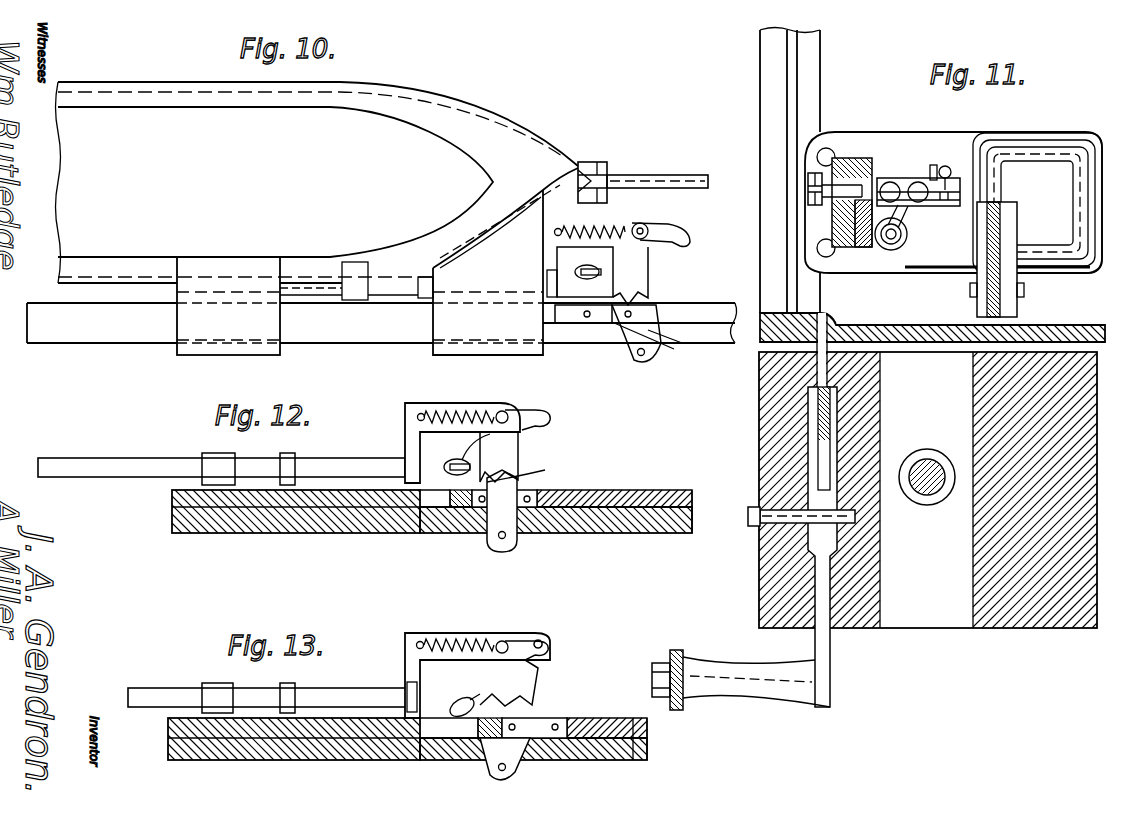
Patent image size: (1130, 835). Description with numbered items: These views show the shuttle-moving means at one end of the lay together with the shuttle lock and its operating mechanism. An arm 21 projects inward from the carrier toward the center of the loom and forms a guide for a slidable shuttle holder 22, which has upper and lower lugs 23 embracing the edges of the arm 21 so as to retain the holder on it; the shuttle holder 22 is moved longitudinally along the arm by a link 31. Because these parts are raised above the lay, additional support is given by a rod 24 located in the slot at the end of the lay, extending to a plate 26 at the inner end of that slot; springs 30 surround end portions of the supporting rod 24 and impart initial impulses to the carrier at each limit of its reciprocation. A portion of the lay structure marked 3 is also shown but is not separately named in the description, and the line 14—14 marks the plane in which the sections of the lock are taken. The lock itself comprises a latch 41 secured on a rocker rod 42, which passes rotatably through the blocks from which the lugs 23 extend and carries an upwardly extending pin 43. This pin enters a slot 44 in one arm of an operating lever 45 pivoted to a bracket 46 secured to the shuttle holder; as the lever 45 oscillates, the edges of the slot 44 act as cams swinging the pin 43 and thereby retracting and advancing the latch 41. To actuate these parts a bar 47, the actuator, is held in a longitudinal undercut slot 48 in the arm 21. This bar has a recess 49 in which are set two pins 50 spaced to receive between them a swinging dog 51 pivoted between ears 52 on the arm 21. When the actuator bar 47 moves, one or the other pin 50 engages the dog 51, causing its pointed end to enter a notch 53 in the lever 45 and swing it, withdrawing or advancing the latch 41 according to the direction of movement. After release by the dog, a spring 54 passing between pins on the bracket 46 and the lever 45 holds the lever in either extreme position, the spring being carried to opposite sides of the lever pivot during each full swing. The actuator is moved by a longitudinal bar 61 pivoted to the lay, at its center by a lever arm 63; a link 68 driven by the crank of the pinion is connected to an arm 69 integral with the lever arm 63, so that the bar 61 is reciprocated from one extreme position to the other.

In FIG. 11, the frame body 3 is at (1048, 618).
In FIG. 10, the section line 14 is at (311, 236).
In FIG. 11, the section line 14 is at (953, 202).
In FIG. 10, the arm 21 is at (382, 323).
In FIG. 11, the arm 21 is at (850, 156).
In FIG. 12, the arm 21 is at (305, 524).
In FIG. 13, the arm 21 is at (238, 745).
In FIG. 10, the shuttle holder 22 is at (452, 98).
In FIG. 11, the shuttle holder 22 is at (1060, 136).
In FIG. 10, the lugs 23 is at (175, 357).
In FIG. 11, the lugs 23 is at (822, 153).
In FIG. 11, the supporting rod 24 is at (928, 496).
In FIG. 11, the plate 26 is at (945, 615).
In FIG. 11, the springs 30 is at (928, 456).
In FIG. 10, the link 31 is at (672, 180).
In FIG. 11, the link 31 is at (1000, 300).
In FIG. 12, the latch 41 is at (205, 455).
In FIG. 13, the latch 41 is at (208, 688).
In FIG. 10, the rocker rod 42 is at (316, 296).
In FIG. 11, the rocker rod 42 is at (895, 251).
In FIG. 12, the rocker rod 42 is at (130, 470).
In FIG. 13, the rocker rod 42 is at (148, 708).
In FIG. 10, the pin 43 is at (648, 272).
In FIG. 11, the pin 43 is at (905, 212).
In FIG. 12, the pin 43 is at (457, 459).
In FIG. 13, the pin 43 is at (462, 716).
In FIG. 10, the slot 44 is at (556, 262).
In FIG. 12, the slot 44 is at (425, 485).
In FIG. 13, the slot 44 is at (520, 696).
In FIG. 10, the operating lever 45 is at (686, 246).
In FIG. 11, the operating lever 45 is at (960, 189).
In FIG. 12, the operating lever 45 is at (502, 442).
In FIG. 13, the operating lever 45 is at (535, 670).
In FIG. 10, the bracket 46 is at (636, 224).
In FIG. 11, the bracket 46 is at (948, 176).
In FIG. 12, the bracket 46 is at (500, 410).
In FIG. 13, the bracket 46 is at (412, 636).
In FIG. 11, the actuator bar 47 is at (864, 250).
In FIG. 12, the actuator bar 47 is at (660, 486).
In FIG. 13, the actuator bar 47 is at (650, 752).
In FIG. 11, the undercut slot 48 is at (868, 170).
In FIG. 12, the undercut slot 48 is at (430, 508).
In FIG. 13, the undercut slot 48 is at (430, 728).
In FIG. 12, the recess 49 is at (572, 524).
In FIG. 13, the recess 49 is at (580, 758).
In FIG. 11, the pins 50 is at (880, 190).
In FIG. 12, the pins 50 is at (560, 492).
In FIG. 13, the pins 50 is at (555, 735).
In FIG. 10, the swinging dog 51 is at (622, 332).
In FIG. 11, the swinging dog 51 is at (808, 185).
In FIG. 12, the swinging dog 51 is at (515, 530).
In FIG. 13, the swinging dog 51 is at (530, 735).
In FIG. 10, the ears 52 is at (656, 362).
In FIG. 11, the ears 52 is at (810, 175).
In FIG. 12, the ears 52 is at (497, 552).
In FIG. 13, the ears 52 is at (496, 777).
In FIG. 10, the notch 53 is at (657, 345).
In FIG. 12, the notch 53 is at (531, 469).
In FIG. 10, the spring 54 is at (588, 230).
In FIG. 11, the spring 54 is at (940, 167).
In FIG. 12, the spring 54 is at (452, 408).
In FIG. 13, the spring 54 is at (478, 636).
In FIG. 11, the longitudinal bar 61 is at (818, 410).
In FIG. 11, the lever arm 63 is at (808, 470).
In FIG. 11, the link 68 is at (678, 650).
In FIG. 11, the arm 69 is at (832, 678).